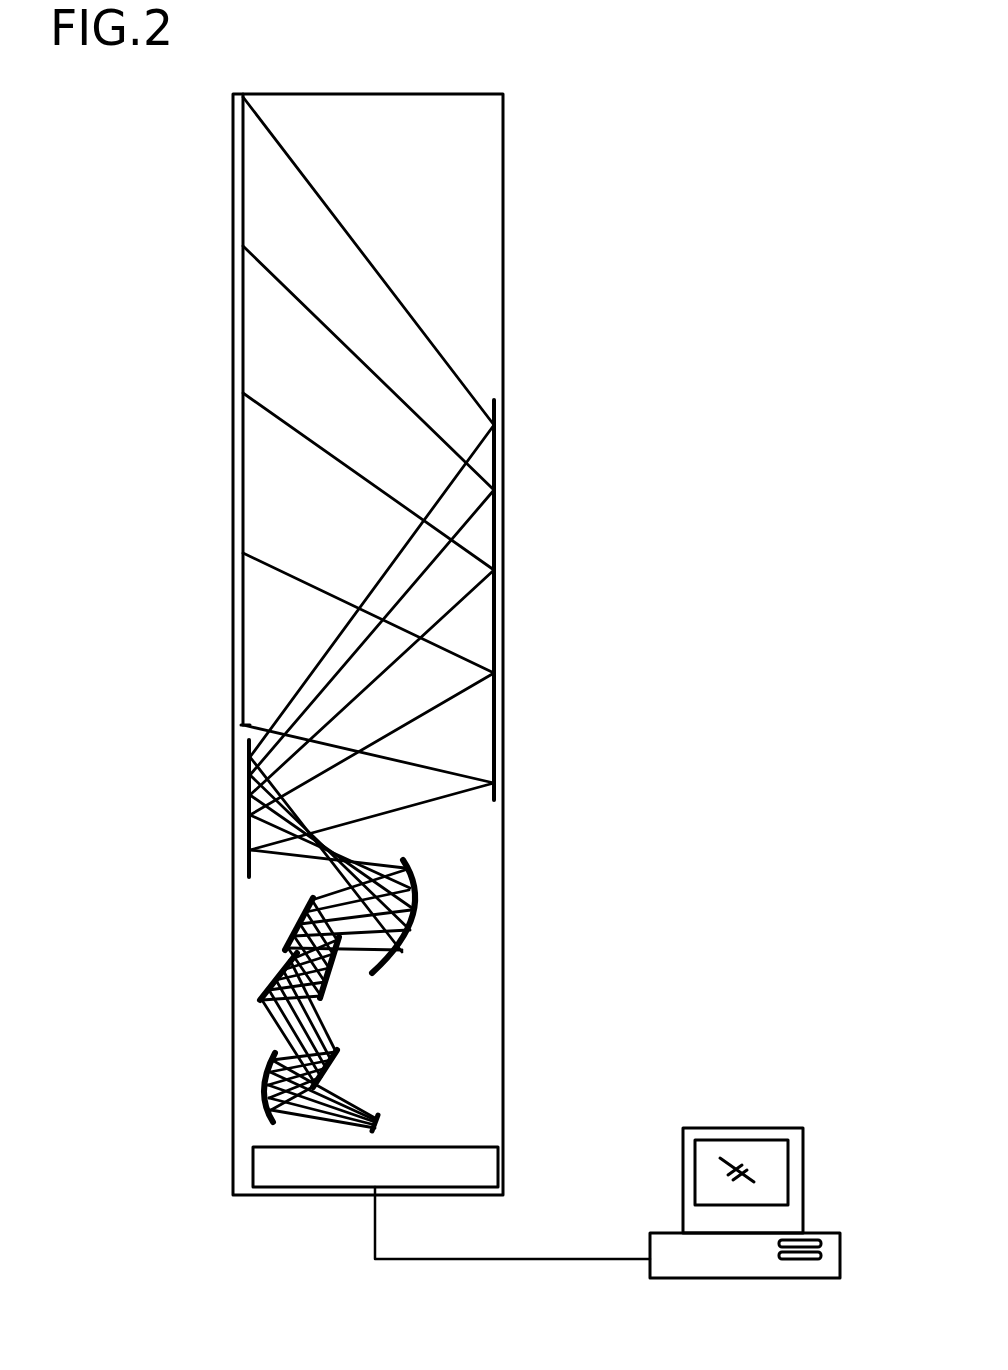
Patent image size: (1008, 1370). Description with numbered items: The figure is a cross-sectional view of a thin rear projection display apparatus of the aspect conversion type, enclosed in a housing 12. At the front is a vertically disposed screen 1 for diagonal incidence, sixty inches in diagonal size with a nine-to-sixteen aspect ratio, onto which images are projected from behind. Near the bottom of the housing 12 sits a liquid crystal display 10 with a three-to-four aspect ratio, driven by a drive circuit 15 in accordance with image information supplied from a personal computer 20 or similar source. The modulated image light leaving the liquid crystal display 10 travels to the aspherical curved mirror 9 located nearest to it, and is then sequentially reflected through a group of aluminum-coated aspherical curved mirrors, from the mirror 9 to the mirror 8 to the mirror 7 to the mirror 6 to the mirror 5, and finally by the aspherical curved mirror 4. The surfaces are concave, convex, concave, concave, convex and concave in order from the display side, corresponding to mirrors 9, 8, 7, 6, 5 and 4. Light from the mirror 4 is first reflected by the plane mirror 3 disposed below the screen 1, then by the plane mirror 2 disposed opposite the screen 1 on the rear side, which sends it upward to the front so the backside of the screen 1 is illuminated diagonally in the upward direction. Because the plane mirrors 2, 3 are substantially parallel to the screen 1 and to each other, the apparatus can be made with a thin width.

The screen 1 is at (243, 470).
The plane mirror 2 is at (494, 653).
The plane mirror 3 is at (249, 838).
The aspherical curved mirror 4 is at (413, 912).
The aspherical curved mirror 5 is at (310, 905).
The aspherical curved mirror 6 is at (338, 998).
The aspherical curved mirror 7 is at (290, 978).
The aspherical curved mirror 8 is at (340, 1056).
The aspherical curved mirror 9 is at (262, 1078).
The liquid crystal display 10 is at (380, 1120).
The housing 12 is at (504, 352).
The drive circuit 15 is at (287, 1195).
The personal computer 20 is at (822, 1233).